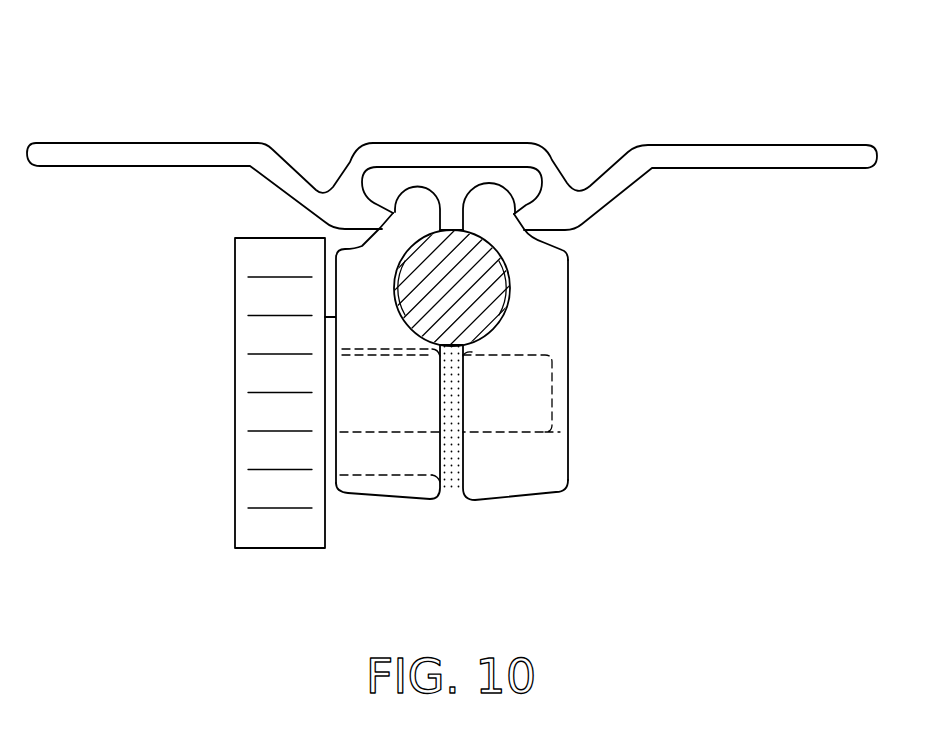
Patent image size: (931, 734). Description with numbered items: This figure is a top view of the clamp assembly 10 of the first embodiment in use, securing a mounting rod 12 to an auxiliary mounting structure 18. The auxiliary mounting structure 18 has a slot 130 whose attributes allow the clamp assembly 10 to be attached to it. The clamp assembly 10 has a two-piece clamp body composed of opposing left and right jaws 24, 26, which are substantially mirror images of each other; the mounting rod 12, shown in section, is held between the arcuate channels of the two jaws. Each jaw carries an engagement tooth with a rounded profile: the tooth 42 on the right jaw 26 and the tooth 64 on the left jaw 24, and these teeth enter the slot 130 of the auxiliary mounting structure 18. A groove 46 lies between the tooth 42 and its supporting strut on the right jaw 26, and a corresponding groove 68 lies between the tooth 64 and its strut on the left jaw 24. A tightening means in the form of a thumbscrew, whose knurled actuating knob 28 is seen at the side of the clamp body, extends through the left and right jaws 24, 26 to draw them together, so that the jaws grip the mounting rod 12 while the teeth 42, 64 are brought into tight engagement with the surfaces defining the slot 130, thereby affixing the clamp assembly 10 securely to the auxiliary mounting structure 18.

The clamp assembly 10 is at (612, 380).
The mounting rod 12 is at (473, 290).
The auxiliary mounting structure 18 is at (740, 143).
The left jaw 24 is at (395, 502).
The right jaw 26 is at (512, 502).
The knurled actuating knob 28 is at (258, 378).
The tooth 42 is at (488, 207).
The groove 46 is at (514, 216).
The tooth 64 is at (418, 202).
The groove 68 is at (393, 213).
The slot 130 is at (453, 185).